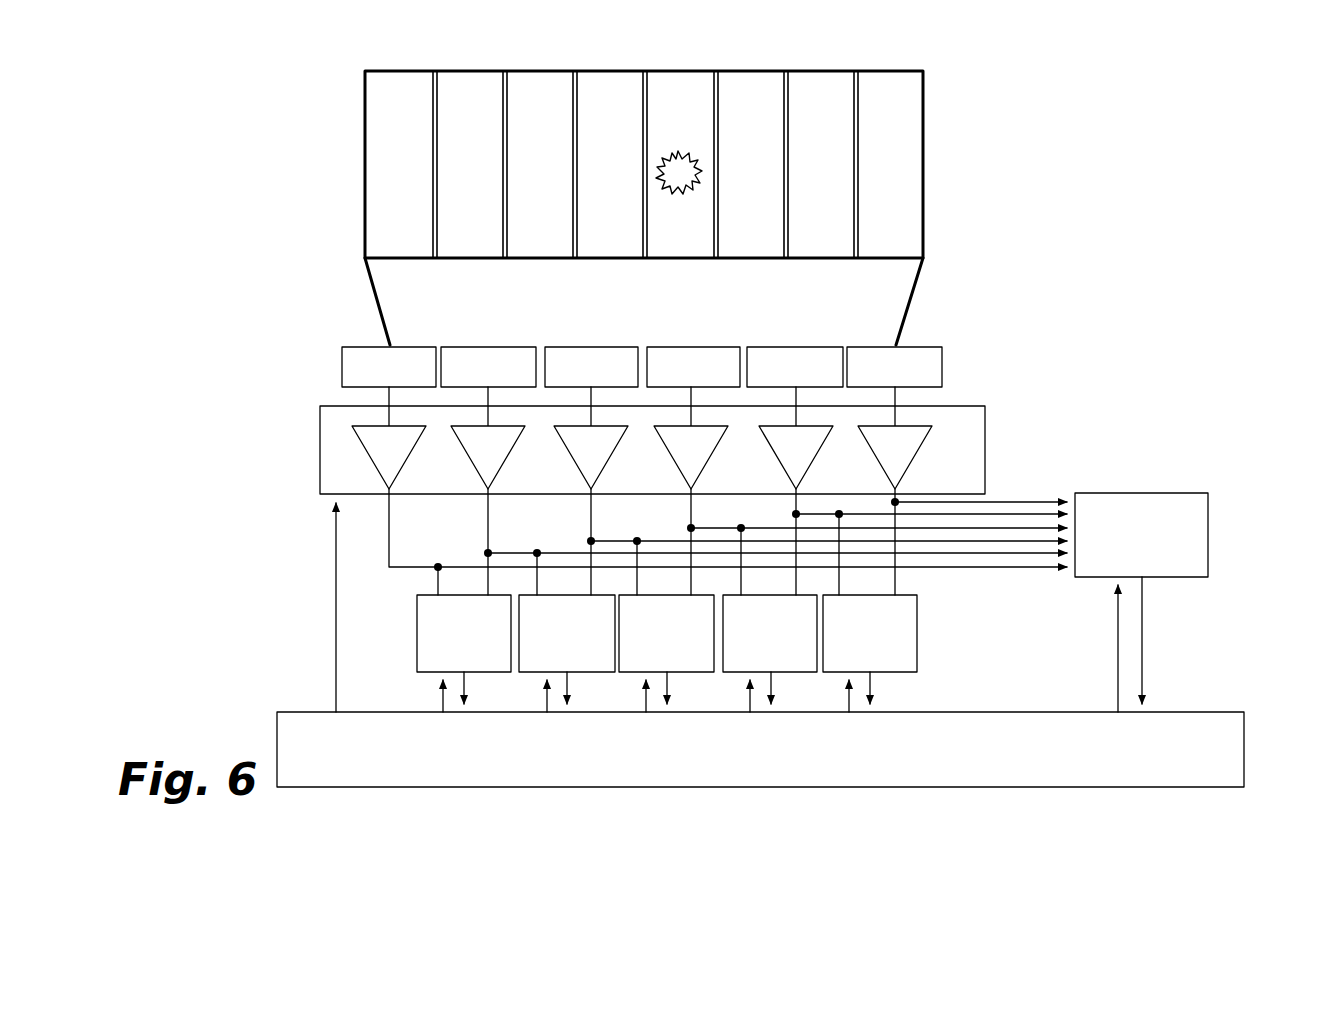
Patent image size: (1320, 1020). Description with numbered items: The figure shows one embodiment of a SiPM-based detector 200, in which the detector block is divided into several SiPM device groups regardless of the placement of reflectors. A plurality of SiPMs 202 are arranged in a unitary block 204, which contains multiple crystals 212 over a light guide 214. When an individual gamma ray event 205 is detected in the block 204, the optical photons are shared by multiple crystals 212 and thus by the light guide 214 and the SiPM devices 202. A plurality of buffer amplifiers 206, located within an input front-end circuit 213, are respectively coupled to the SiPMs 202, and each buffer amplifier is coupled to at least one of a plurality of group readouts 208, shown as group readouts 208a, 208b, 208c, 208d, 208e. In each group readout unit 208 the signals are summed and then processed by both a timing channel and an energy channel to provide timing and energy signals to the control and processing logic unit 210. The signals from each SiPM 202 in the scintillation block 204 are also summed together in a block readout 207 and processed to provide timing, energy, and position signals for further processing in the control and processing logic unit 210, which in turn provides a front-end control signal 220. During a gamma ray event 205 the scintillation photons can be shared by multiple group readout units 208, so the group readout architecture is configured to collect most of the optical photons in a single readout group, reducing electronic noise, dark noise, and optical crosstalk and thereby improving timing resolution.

The SiPM-based detector 200 is at (1168, 86).
The SiPMs 202 is at (942, 377).
The unitary block 204 is at (924, 87).
The gamma ray event 205 is at (677, 150).
The buffer amplifiers 206 is at (915, 449).
The block readout 207 is at (1075, 582).
The group readouts 208 is at (667, 653).
The group readout 208a is at (469, 653).
The group readout 208b is at (571, 653).
The group readout 208c is at (671, 653).
The group readout 208d is at (775, 653).
The group readout 208e is at (874, 653).
The control and processing logic unit 210 is at (1244, 744).
The crystals 212 is at (818, 78).
The input front-end circuit 213 is at (320, 452).
The light guide 214 is at (908, 300).
The front-end control signal 220 is at (336, 612).